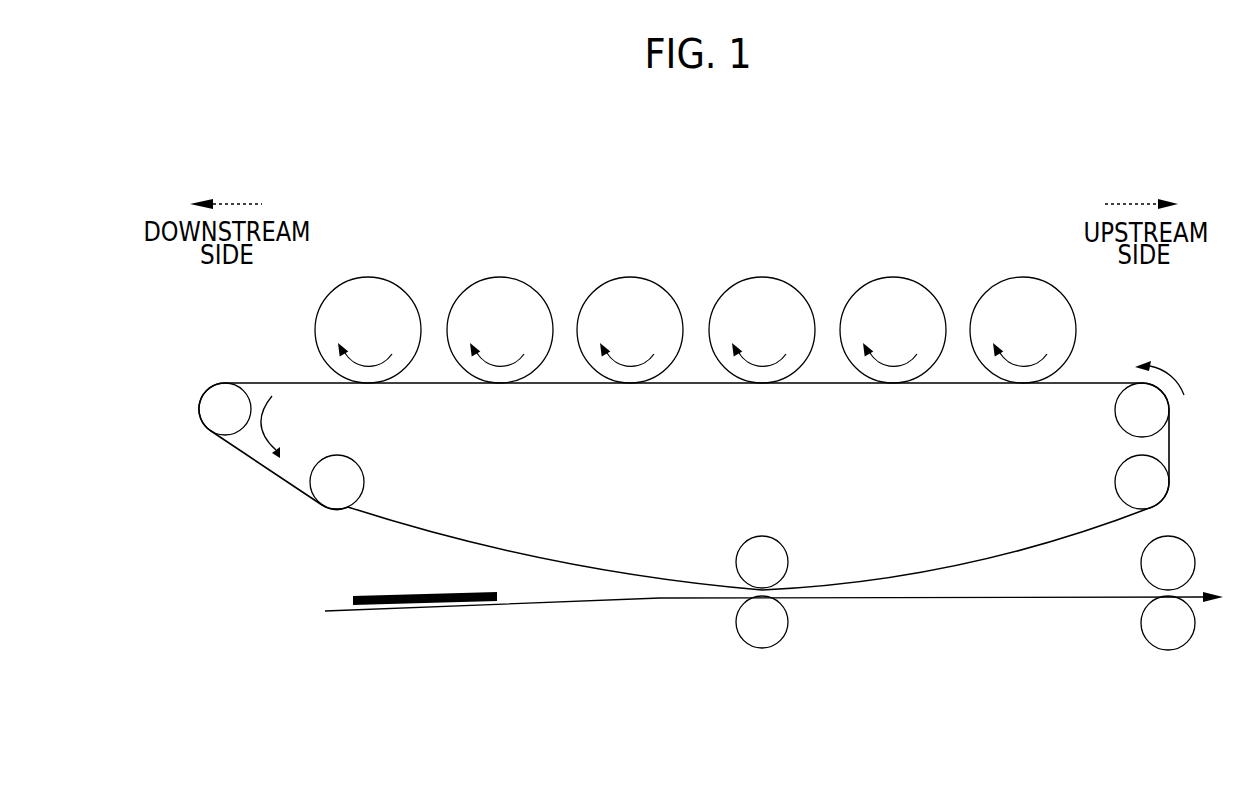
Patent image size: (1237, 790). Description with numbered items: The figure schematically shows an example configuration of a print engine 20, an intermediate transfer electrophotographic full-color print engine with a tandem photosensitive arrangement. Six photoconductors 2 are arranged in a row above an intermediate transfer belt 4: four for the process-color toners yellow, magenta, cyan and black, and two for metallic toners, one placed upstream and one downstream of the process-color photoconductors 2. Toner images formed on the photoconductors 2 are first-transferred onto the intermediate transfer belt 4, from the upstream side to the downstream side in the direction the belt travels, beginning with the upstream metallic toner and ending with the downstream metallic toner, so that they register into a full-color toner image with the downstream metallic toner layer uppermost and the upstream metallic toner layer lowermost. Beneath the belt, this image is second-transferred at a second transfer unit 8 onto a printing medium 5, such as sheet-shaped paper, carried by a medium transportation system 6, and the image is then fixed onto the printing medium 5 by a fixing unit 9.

The print engine 20 is at (826, 184).
The photoconductors 2 is at (695, 303).
The intermediate transfer belt 4 is at (282, 383).
The printing medium 5 is at (394, 592).
The medium transportation system 6 is at (544, 605).
The second transfer unit 8 is at (798, 610).
The fixing unit 9 is at (1128, 611).